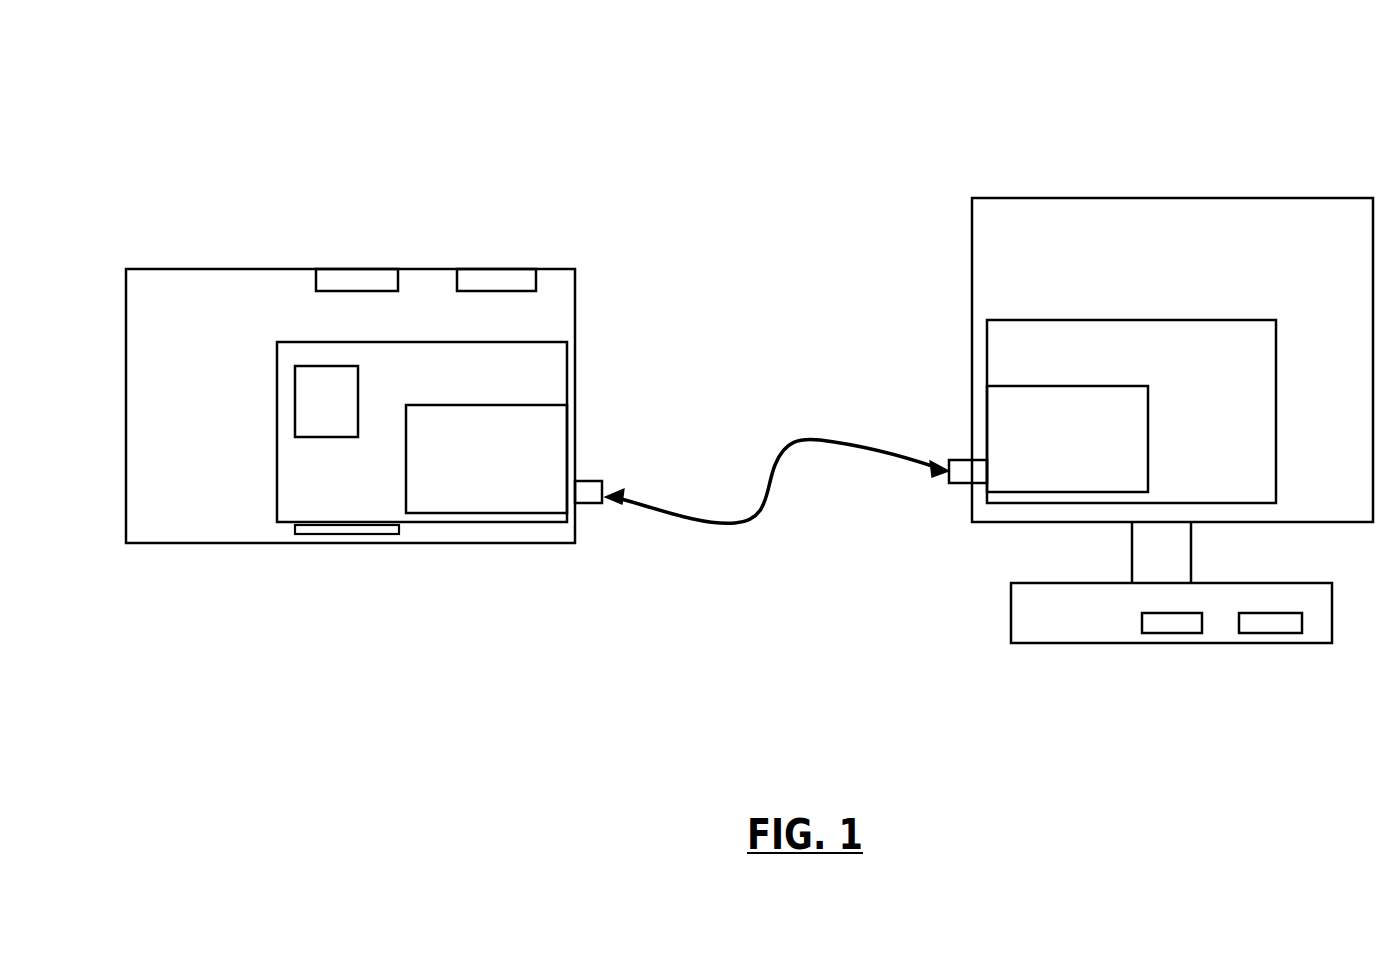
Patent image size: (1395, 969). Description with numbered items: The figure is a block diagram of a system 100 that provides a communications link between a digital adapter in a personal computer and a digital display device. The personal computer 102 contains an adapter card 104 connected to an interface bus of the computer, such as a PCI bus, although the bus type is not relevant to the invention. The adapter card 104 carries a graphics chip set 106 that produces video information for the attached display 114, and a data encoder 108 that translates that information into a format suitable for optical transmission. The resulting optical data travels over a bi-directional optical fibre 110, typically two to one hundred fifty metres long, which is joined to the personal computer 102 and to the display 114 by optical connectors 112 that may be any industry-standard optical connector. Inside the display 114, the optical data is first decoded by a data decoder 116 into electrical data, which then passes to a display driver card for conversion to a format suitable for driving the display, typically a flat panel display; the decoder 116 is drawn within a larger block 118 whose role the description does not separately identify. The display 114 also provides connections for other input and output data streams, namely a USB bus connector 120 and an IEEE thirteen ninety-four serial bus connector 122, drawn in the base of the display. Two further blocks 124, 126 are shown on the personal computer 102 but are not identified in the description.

The system 100 is at (777, 26).
The personal computer 102 is at (201, 314).
The adapter card 104 is at (278, 513).
The graphics chip set 106 is at (349, 413).
The data encoder 108 is at (483, 513).
The bi-directional optical fibre 110 is at (820, 440).
The optical connectors 112 is at (597, 481).
The display 114 is at (1020, 198).
The data decoder 116 is at (1000, 493).
The operating system / display 118 is at (1233, 320).
The USB bus connector 120 is at (1183, 633).
The IEEE 1394 serial bus connector 122 is at (1283, 633).
The button 124 is at (370, 269).
The button 126 is at (490, 269).